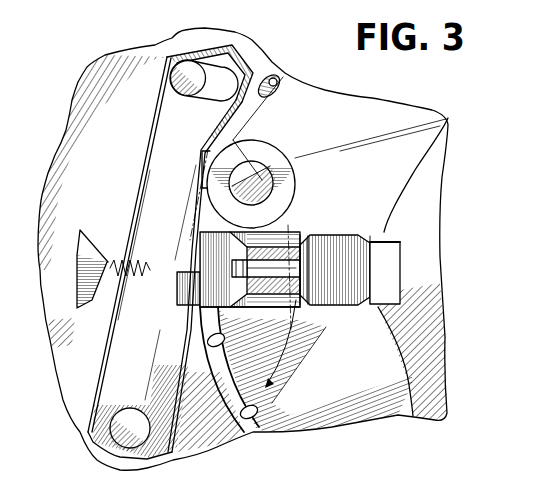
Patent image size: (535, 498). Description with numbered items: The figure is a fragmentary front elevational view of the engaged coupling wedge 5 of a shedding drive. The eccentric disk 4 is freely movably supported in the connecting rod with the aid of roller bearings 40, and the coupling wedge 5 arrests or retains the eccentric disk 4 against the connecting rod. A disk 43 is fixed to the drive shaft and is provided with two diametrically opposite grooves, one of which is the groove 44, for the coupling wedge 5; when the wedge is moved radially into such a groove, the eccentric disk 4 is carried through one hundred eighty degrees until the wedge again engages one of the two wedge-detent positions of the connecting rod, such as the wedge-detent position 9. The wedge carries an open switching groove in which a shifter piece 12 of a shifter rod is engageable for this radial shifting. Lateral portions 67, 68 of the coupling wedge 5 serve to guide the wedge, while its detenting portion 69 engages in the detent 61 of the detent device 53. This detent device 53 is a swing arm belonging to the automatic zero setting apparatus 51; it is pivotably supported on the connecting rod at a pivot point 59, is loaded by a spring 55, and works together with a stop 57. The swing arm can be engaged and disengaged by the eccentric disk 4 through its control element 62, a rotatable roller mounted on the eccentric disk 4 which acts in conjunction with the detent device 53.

The eccentric disk 4 is at (313, 418).
The coupling wedge 5 is at (343, 257).
The wedge-detent position 9 is at (169, 225).
The shifter piece 12 is at (268, 388).
The roller bearings 40 is at (268, 80).
The disk 43 is at (423, 357).
The groove 44 is at (384, 236).
The automatic zero setting apparatus 51 is at (97, 96).
The detent device 53 is at (163, 138).
The spring 55 is at (108, 262).
The stop 57 is at (184, 70).
The pivot point 59 is at (115, 422).
The detent 61 is at (178, 280).
The control element 62 is at (263, 145).
The lateral portion 67 is at (328, 235).
The lateral portion 68 is at (322, 312).
The detenting portion 69 is at (198, 309).